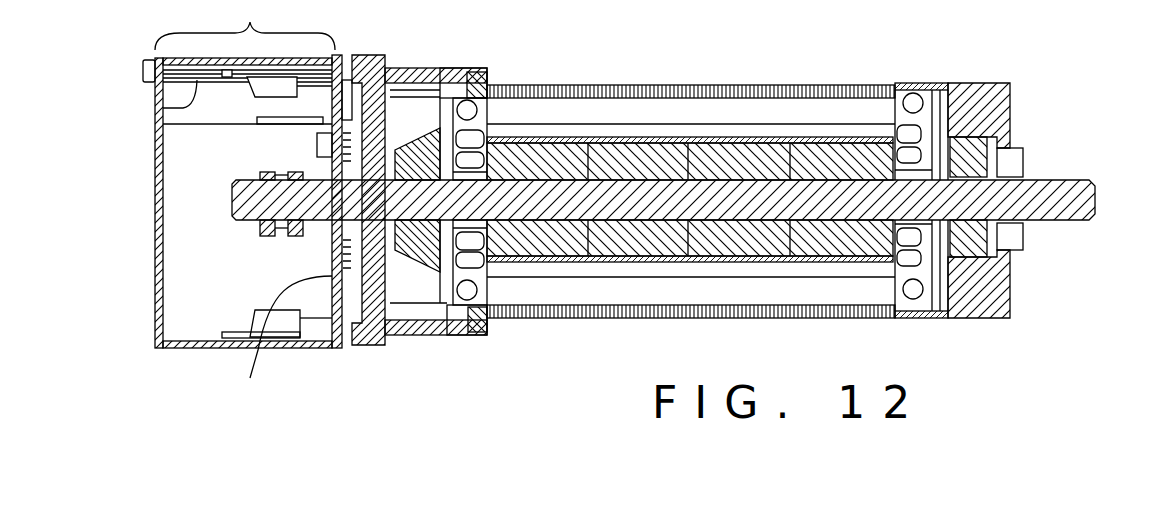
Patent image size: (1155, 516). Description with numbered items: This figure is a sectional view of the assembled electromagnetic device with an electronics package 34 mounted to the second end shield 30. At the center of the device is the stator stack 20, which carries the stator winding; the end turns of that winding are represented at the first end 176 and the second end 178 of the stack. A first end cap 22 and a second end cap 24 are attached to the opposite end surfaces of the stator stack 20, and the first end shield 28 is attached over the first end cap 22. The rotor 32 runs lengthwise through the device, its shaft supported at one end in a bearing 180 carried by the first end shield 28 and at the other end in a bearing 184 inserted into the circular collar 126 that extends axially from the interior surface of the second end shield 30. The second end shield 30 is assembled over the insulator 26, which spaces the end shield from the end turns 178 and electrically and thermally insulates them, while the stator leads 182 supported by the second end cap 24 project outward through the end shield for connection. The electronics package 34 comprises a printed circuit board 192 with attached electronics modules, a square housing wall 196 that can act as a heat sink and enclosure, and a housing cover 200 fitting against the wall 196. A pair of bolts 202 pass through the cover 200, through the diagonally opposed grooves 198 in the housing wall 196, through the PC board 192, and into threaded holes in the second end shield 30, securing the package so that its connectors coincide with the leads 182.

The stator stack 20 is at (665, 85).
The first end cap 22 is at (907, 243).
The second end cap 24 is at (478, 262).
The insulator 26 is at (423, 70).
The first end shield 28 is at (1010, 122).
The second end shield 30 is at (355, 347).
The rotor 32 is at (1083, 180).
The electronics package 34 is at (245, 78).
The circular collar 126 is at (424, 275).
The end turns at first end 176 is at (955, 84).
The end turns at second end 178 is at (450, 333).
The bearing 180 is at (1010, 147).
The stator leads 182 is at (410, 70).
The bearing 184 is at (412, 247).
The printed circuit board 192 is at (277, 343).
The housing wall 196 is at (188, 350).
The grooves 198 is at (163, 107).
The housing cover 200 is at (153, 297).
The bolts 202 is at (143, 70).